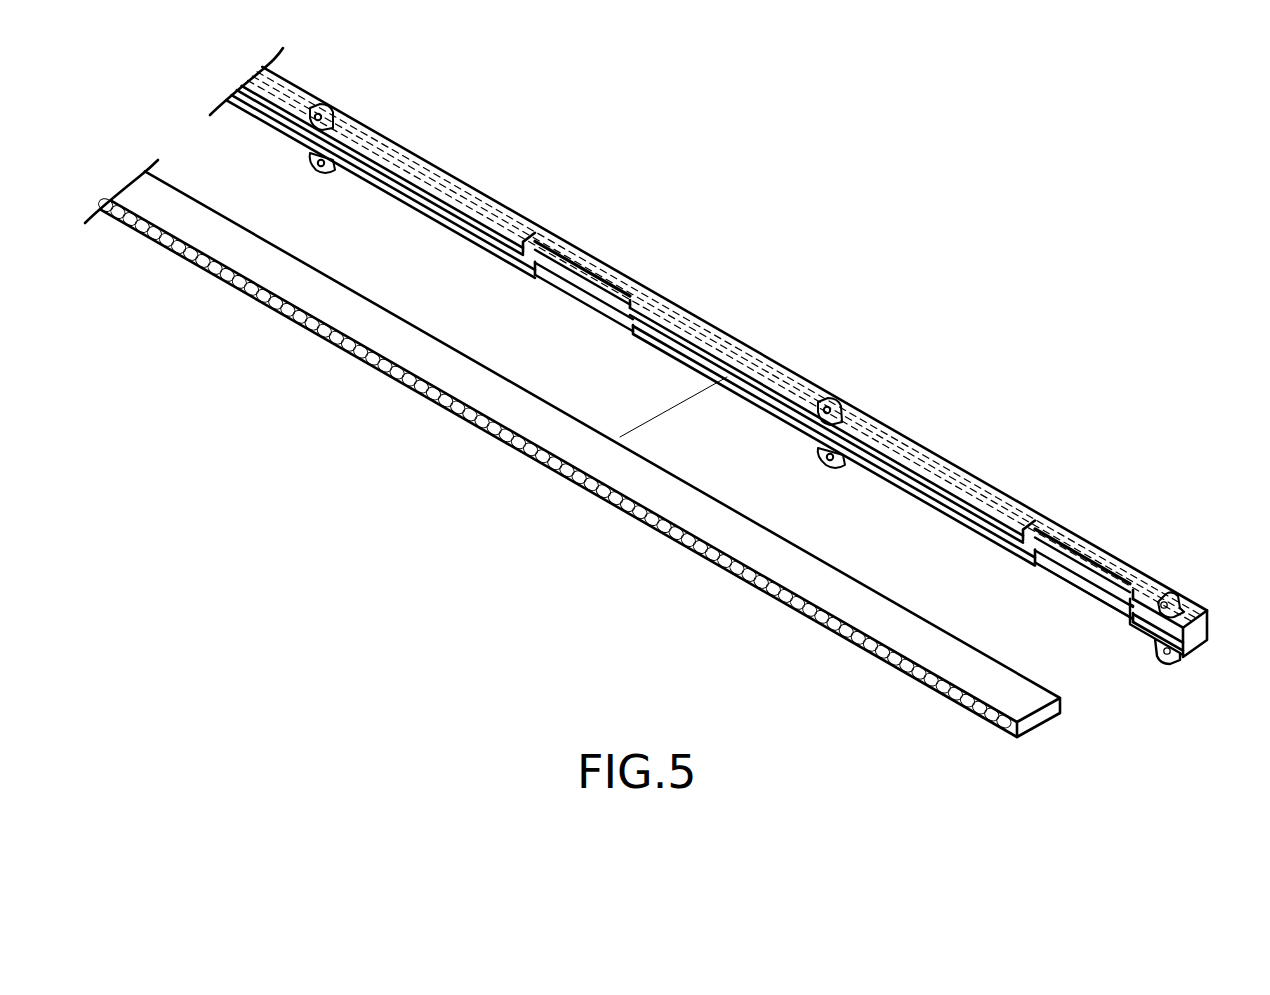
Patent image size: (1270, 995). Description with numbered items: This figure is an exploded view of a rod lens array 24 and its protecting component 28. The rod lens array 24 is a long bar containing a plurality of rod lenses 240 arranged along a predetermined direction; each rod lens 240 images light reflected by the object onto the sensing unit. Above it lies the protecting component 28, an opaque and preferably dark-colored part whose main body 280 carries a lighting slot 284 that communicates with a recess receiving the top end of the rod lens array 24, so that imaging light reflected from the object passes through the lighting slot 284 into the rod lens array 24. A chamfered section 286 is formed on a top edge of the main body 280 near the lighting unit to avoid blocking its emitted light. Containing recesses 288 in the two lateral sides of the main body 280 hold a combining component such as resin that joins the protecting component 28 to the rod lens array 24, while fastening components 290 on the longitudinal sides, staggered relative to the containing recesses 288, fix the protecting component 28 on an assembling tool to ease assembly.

The rod lens array 24 is at (572, 448).
The protecting component 28 is at (729, 385).
The rod lens 240 is at (790, 600).
The main body 280 is at (1192, 638).
The lighting slot 284 is at (705, 333).
The chamfered section 286 is at (1187, 612).
The containing recess 288 is at (1062, 570).
The fastening component 290 is at (832, 397).